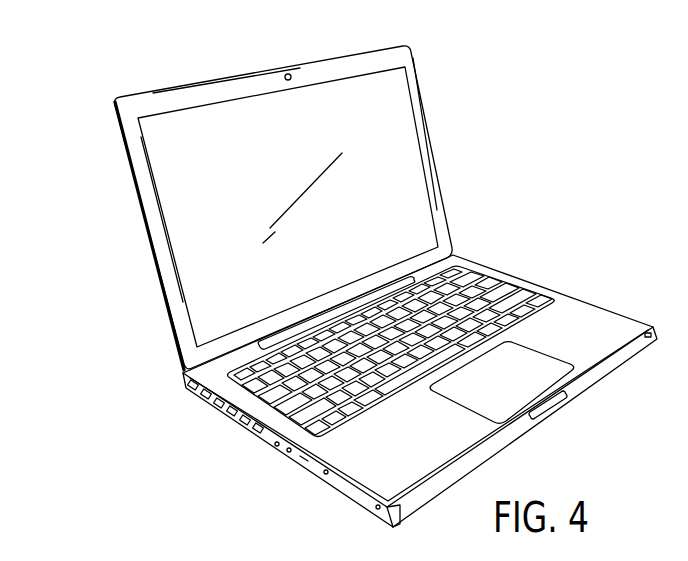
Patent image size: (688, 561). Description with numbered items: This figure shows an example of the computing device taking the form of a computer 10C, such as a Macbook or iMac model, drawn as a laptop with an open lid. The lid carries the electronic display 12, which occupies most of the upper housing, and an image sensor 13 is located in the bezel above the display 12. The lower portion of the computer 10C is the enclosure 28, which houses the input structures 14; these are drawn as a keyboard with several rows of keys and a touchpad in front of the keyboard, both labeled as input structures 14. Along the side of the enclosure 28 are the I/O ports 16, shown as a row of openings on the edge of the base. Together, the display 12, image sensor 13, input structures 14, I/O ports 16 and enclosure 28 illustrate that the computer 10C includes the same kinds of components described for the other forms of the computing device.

The computer 10C is at (125, 225).
The electronic display 12 is at (397, 163).
The image sensor 13 is at (284, 77).
The input structures 14 is at (502, 288).
The I/O ports 16 is at (210, 410).
The enclosure 28 is at (557, 289).